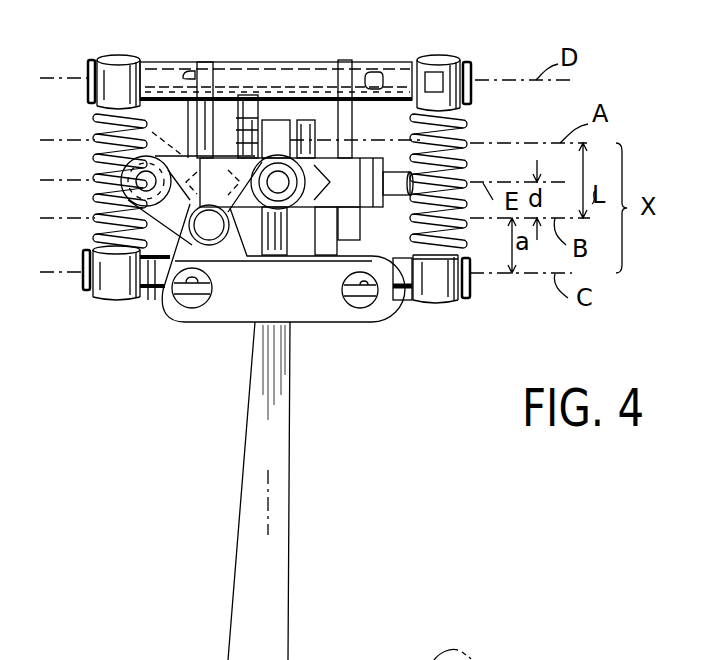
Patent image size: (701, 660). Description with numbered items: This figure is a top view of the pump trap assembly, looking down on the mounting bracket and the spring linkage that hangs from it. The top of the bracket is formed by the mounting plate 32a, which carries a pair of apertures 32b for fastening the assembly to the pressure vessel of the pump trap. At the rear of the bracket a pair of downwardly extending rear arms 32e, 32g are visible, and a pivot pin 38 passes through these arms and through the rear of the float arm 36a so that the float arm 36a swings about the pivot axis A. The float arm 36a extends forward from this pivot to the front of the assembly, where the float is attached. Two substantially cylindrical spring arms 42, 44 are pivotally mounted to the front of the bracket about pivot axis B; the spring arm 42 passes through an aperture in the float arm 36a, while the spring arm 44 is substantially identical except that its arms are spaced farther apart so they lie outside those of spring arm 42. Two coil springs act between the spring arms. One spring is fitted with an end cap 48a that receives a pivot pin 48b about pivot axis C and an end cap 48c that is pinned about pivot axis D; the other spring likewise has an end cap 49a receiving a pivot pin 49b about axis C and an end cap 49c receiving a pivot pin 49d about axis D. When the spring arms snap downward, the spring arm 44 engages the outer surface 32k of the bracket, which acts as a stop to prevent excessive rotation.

The mounting plate 32a is at (222, 322).
The apertures 32b is at (358, 308).
The rear arm 32e is at (240, 130).
The rear arm 32g is at (323, 145).
The outer surface 32k is at (242, 112).
The float arm 36a is at (273, 533).
The pivot pin 38 is at (318, 152).
The spring arm 42 is at (153, 298).
The spring arm 44 is at (157, 62).
The end cap 48a is at (94, 76).
The pivot pin 48b is at (84, 290).
The end cap 48c is at (118, 56).
The end cap 49a is at (437, 295).
The pivot pin 49b is at (474, 290).
The end cap 49c is at (436, 58).
The pivot pin 49d is at (475, 74).